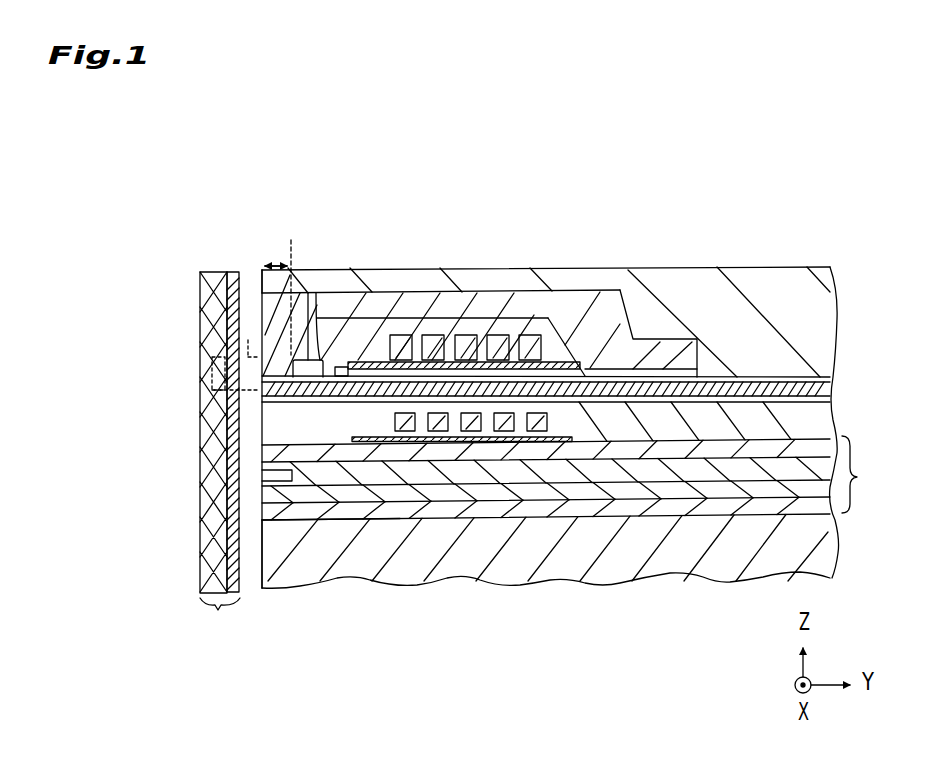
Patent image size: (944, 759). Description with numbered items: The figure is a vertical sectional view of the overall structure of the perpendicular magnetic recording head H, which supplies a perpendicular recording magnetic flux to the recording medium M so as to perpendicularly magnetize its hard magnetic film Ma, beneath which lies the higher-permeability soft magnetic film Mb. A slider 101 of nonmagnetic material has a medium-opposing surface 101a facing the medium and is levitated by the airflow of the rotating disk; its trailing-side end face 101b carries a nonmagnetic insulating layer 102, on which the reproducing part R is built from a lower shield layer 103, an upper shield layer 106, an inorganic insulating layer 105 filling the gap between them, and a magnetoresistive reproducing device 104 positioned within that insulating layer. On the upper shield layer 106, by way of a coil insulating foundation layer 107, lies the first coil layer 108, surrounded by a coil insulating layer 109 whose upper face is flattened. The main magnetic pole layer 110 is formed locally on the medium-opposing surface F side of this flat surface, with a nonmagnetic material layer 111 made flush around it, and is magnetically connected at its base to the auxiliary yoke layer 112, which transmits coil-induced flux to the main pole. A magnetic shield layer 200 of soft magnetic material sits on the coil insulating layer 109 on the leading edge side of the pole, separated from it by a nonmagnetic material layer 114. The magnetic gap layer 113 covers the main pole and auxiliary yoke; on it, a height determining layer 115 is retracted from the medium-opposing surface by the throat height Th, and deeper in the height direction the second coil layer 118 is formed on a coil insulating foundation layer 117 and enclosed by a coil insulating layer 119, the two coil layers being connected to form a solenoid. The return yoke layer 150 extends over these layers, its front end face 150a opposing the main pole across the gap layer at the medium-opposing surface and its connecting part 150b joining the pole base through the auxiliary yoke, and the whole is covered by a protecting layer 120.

The perpendicular magnetic recording head H is at (162, 172).
The medium-opposing surface F is at (251, 288).
The throat height Th is at (275, 262).
The magnetic gap layer 113 is at (263, 264).
The height determining layer 115 is at (310, 293).
The coil insulating foundation layer 117 is at (365, 318).
The auxiliary yoke layer 112 is at (414, 335).
The second coil layer 118 is at (460, 335).
The return yoke layer 150 is at (506, 290).
The front end face 150a is at (256, 323).
The connecting part 150b is at (657, 339).
The coil insulating layer 119 is at (553, 330).
The protecting layer 120 is at (740, 297).
The nonmagnetic material layer 111 is at (797, 377).
The main magnetic pole layer 110 is at (262, 390).
The coil insulating layer 109 is at (262, 443).
The upper shield layer 106 is at (262, 462).
The reproducing device 104 is at (278, 478).
The lower shield layer 103 is at (262, 500).
The nonmagnetic insulating layer 102 is at (262, 522).
The nonmagnetic material layer 114 is at (600, 520).
The coil insulating foundation layer 107 is at (413, 432).
The first coil layer 108 is at (473, 443).
The inorganic insulating layer 105 is at (357, 527).
The slider 101 is at (663, 567).
The medium-opposing surface 101a is at (259, 555).
The trailing-side end face 101b is at (734, 505).
The magnetic shield layer 200 is at (310, 521).
The recording medium M is at (220, 618).
The hard magnetic film Ma is at (211, 585).
The soft magnetic film Mb is at (236, 550).
The reproducing part R is at (857, 474).